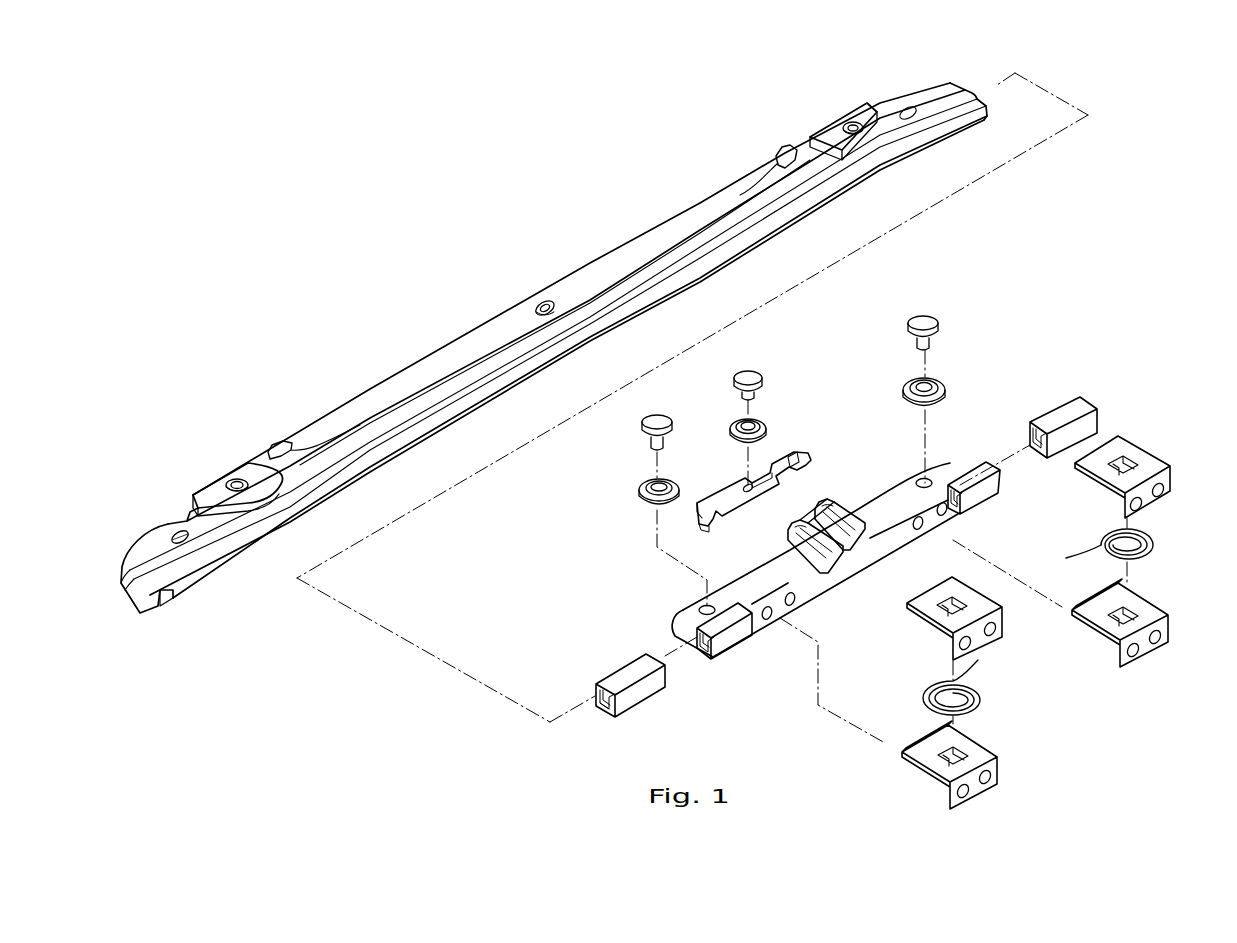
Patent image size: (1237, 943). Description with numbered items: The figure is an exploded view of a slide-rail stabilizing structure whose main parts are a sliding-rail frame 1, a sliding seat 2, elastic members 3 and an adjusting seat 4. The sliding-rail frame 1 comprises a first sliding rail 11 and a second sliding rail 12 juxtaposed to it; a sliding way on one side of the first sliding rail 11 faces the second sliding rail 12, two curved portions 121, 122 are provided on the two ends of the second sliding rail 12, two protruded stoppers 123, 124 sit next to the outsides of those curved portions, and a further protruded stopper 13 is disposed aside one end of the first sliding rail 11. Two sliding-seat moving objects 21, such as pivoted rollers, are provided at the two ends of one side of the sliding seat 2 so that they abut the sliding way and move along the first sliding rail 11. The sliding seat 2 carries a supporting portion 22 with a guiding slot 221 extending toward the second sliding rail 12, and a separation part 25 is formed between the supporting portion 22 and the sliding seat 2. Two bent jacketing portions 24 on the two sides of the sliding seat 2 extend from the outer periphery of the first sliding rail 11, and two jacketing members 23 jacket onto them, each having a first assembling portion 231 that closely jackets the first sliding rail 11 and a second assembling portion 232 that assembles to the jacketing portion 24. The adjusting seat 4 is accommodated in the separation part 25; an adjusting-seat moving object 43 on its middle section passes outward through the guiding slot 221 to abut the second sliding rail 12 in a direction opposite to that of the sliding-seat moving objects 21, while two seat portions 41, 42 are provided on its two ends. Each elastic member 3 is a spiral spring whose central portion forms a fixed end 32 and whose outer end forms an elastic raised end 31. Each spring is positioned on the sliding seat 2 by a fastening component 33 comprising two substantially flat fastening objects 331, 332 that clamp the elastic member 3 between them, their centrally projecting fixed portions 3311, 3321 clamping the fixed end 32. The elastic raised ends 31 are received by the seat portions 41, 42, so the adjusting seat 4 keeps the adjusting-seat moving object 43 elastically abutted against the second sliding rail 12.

The sliding-rail frame 1 is at (579, 365).
The first sliding rail 11 is at (213, 547).
The second sliding rail 12 is at (488, 370).
The protruded stopper 13 is at (150, 597).
The curved portion 121 is at (788, 180).
The curved portion 122 is at (320, 455).
The protruded stopper 123 is at (835, 138).
The protruded stopper 124 is at (218, 493).
The sliding seat 2 is at (811, 534).
The sliding-seat moving object 21 is at (638, 502).
The supporting portion 22 is at (846, 501).
The guiding slot 221 is at (825, 508).
The jacketing member 23 is at (811, 537).
The first assembling portion 231 is at (597, 687).
The second assembling portion 232 is at (610, 705).
The bent jacketing portion 24 is at (700, 607).
The separation part 25 is at (817, 565).
The elastic member 3 is at (1069, 601).
The elastic raised end 31 is at (1068, 552).
The fixed end 32 is at (1038, 605).
The fastening component 33 is at (1063, 601).
The fastening object 331 is at (1065, 526).
The fixed portion 3311 is at (1130, 457).
The fastening object 332 is at (1060, 680).
The fixed portion 3321 is at (1038, 686).
The adjusting seat 4 is at (777, 461).
The seat portion 41 is at (808, 466).
The seat portion 42 is at (717, 513).
The adjusting-seat moving object 43 is at (768, 430).